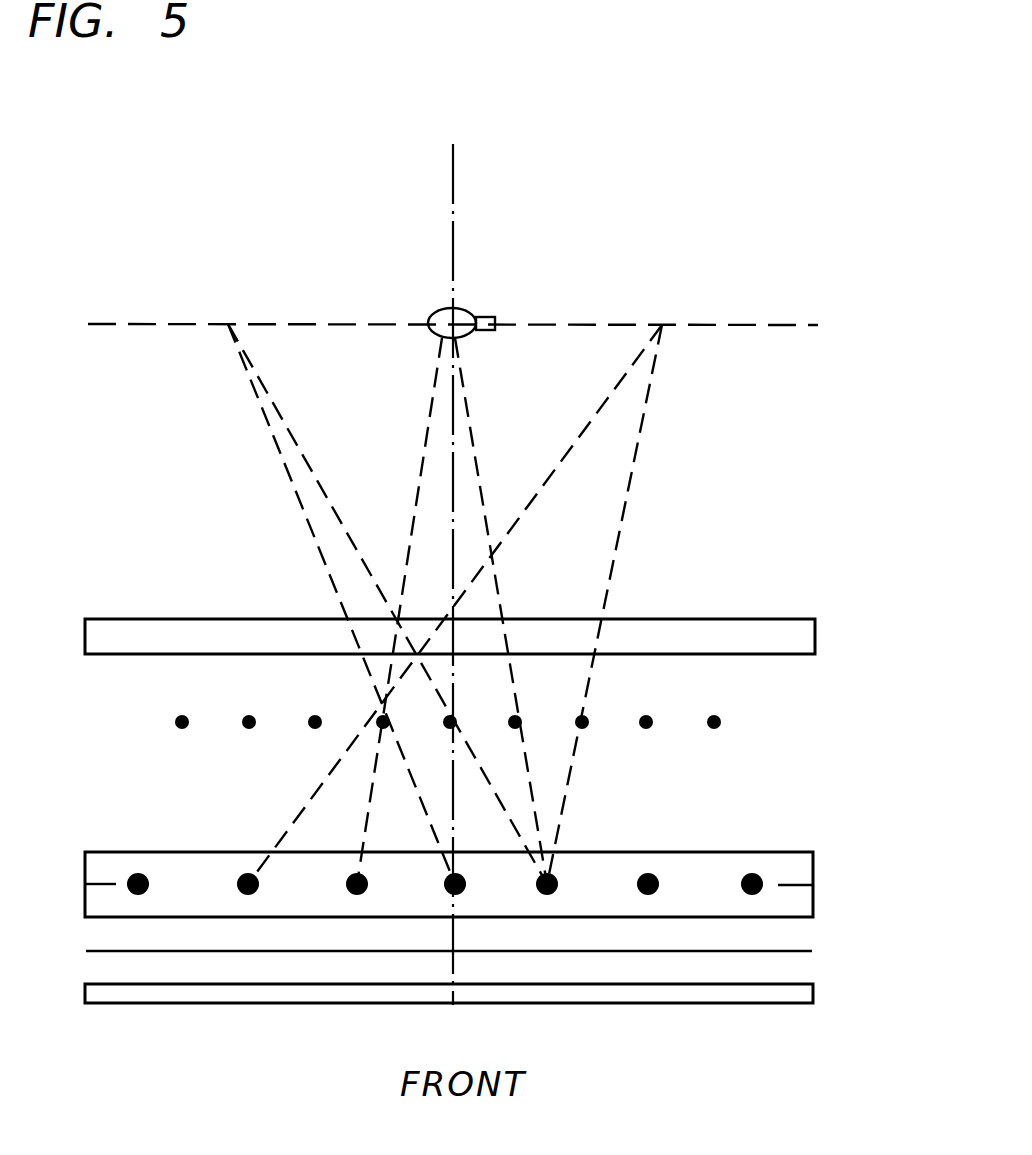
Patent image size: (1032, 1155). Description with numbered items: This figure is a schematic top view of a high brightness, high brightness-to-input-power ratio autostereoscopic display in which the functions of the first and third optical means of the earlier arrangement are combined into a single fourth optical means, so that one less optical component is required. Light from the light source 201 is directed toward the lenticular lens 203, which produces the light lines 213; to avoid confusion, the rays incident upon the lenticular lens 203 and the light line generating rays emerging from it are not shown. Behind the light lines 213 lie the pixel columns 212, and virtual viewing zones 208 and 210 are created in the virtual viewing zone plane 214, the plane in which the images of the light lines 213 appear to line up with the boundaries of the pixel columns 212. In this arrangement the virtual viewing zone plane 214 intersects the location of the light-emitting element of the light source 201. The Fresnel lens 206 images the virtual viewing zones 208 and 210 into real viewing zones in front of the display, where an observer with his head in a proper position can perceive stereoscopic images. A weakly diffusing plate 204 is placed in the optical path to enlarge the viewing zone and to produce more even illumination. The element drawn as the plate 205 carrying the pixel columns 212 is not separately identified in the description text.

The light source 201 is at (442, 306).
The lenticular lens 203 is at (815, 640).
The weakly diffusing plate 204 is at (800, 952).
The second plate 205 is at (813, 868).
The Fresnel lens 206 is at (813, 992).
The virtual viewing zone 208 is at (508, 432).
The virtual viewing zone 210 is at (398, 428).
The pixel columns 212 is at (552, 872).
The light lines 213 is at (650, 730).
The virtual viewing zone plane 214 is at (794, 327).